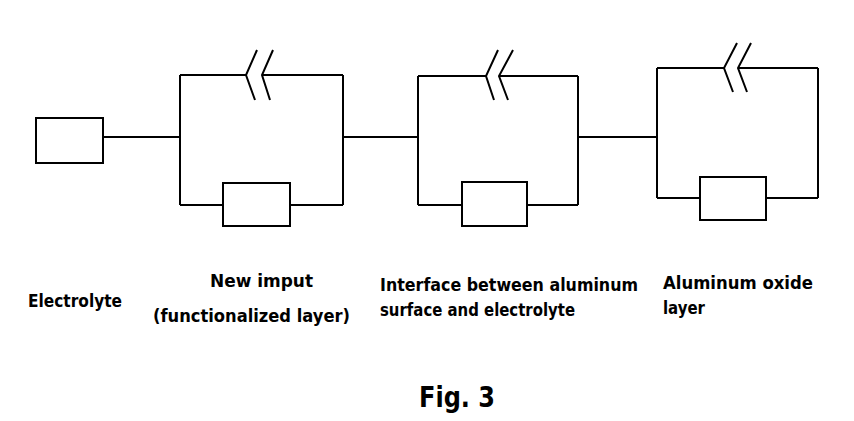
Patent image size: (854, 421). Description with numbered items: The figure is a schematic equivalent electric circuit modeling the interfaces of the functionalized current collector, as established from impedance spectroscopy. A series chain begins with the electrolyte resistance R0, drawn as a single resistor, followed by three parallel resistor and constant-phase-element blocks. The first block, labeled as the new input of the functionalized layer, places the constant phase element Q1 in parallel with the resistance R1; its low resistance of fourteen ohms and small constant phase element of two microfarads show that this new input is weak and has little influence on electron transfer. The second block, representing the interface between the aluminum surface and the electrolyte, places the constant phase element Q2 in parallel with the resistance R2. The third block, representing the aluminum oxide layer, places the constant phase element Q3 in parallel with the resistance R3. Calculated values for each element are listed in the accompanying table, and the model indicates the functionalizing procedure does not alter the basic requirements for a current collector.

The electrolyte resistance R0 is at (69, 140).
The constant phase element of the functionalized layer Q1 is at (261, 61).
The resistance of the functionalized layer R1 is at (256, 204).
The constant phase element of the aluminum surface/electrolyte interface Q2 is at (499, 61).
The resistance of the aluminum surface/electrolyte interface R2 is at (494, 204).
The constant phase element of the aluminum oxide layer Q3 is at (738, 55).
The resistance of the aluminum oxide layer R3 is at (733, 198).